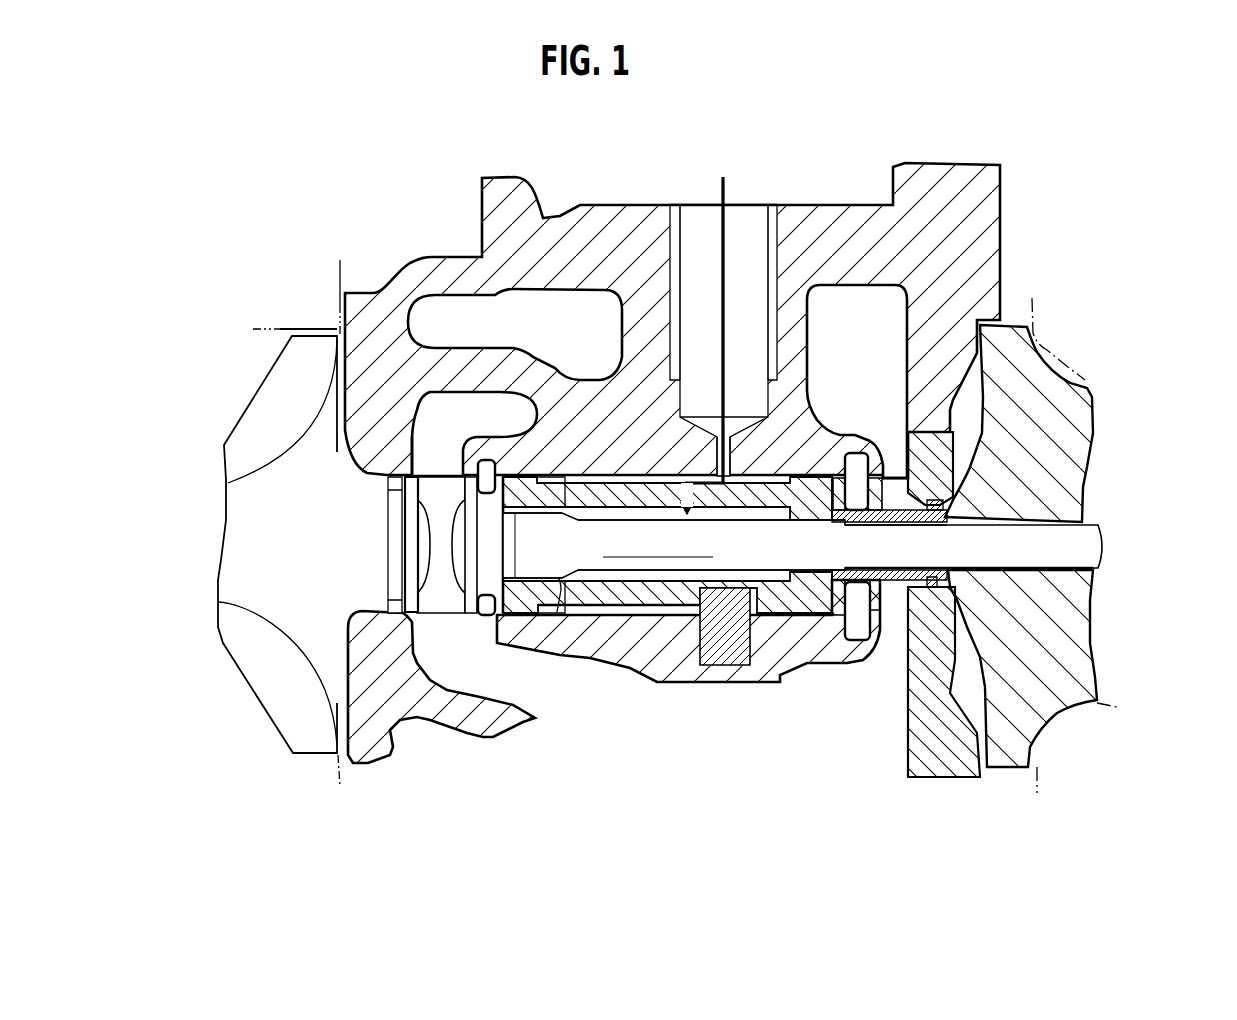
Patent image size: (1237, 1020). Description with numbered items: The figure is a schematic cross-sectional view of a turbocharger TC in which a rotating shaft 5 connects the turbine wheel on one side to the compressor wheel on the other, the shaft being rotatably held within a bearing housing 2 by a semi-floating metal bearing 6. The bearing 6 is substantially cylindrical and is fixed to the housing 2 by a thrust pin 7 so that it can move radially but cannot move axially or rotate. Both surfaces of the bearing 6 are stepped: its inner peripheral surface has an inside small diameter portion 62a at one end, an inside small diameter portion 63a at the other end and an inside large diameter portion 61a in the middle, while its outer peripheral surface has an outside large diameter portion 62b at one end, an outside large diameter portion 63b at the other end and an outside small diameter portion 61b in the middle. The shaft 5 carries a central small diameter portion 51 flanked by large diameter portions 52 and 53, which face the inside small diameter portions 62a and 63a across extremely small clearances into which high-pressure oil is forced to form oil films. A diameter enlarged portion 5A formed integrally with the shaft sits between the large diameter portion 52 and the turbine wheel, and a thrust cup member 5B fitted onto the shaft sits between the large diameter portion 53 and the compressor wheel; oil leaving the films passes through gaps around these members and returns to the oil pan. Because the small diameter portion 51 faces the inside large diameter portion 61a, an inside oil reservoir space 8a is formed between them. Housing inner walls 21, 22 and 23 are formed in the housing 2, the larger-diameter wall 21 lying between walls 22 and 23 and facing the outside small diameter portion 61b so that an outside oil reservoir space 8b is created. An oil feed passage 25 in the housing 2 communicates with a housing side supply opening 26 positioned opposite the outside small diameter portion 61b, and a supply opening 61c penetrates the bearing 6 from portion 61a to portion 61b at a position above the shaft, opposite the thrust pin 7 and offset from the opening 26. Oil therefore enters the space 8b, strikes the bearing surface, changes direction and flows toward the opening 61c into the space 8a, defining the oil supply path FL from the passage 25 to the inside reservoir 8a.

The turbocharger TC is at (844, 133).
The oil supply path FL is at (728, 190).
The bearing housing 2 is at (1003, 228).
The housing inner wall 21 is at (598, 472).
The housing inner wall 22 is at (533, 463).
The housing inner wall 23 is at (813, 463).
The oil feed passage 25 is at (747, 220).
The housing side supply opening 26 is at (735, 450).
The rotating shaft 5 is at (759, 617).
The diameter enlarged portion 5A is at (467, 617).
The thrust cup member 5B is at (893, 617).
The small diameter portion 51 is at (675, 567).
The large diameter portion 52 is at (547, 560).
The large diameter portion 53 is at (798, 567).
The semi-floating metal bearing 6 is at (662, 567).
The inside large diameter portion 61a is at (703, 587).
The outside small diameter portion 61b is at (643, 612).
The supply opening 61c is at (682, 476).
The inside small diameter portion 62a is at (555, 645).
The outside large diameter portion 62b is at (518, 617).
The inside small diameter portion 63a is at (813, 590).
The outside large diameter portion 63b is at (808, 640).
The thrust pin 7 is at (743, 663).
The inside oil reservoir space 8a is at (715, 572).
The outside oil reservoir space 8b is at (807, 443).